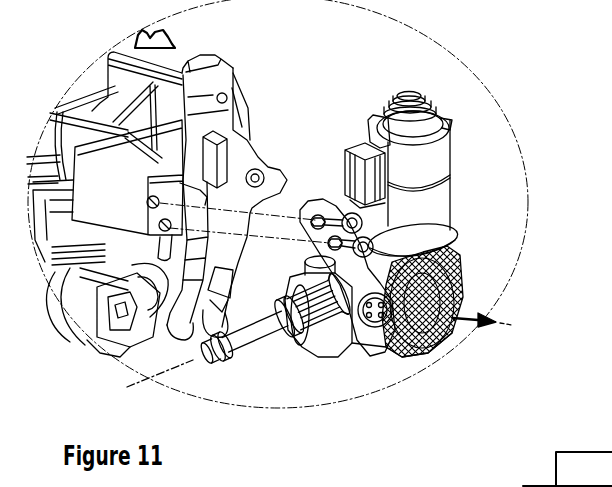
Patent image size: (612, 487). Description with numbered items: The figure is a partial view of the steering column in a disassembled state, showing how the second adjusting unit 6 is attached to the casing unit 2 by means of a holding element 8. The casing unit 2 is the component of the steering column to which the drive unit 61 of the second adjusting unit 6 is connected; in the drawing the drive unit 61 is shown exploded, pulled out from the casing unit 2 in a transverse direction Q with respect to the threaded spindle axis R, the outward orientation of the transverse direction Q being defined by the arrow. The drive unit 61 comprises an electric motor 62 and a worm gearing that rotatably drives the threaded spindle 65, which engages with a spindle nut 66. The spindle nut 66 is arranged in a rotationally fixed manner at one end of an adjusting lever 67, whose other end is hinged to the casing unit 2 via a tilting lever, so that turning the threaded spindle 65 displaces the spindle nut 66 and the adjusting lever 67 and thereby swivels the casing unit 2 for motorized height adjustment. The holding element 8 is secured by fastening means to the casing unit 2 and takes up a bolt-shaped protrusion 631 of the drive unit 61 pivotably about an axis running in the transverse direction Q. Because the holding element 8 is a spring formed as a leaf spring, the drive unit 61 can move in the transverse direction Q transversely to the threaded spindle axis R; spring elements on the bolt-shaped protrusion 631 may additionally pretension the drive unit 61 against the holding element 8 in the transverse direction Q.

The casing unit 2 is at (87, 115).
The second adjusting unit 6 is at (506, 206).
The holding element 8 is at (356, 283).
The drive unit 61 is at (410, 372).
The electric motor 62 is at (436, 163).
The bolt-shaped protrusion 631 is at (462, 269).
The threaded spindle 65 is at (247, 342).
The spindle nut 66 is at (300, 343).
The adjusting lever 67 is at (103, 317).
The transverse direction Q is at (472, 313).
The threaded spindle axis R is at (155, 378).